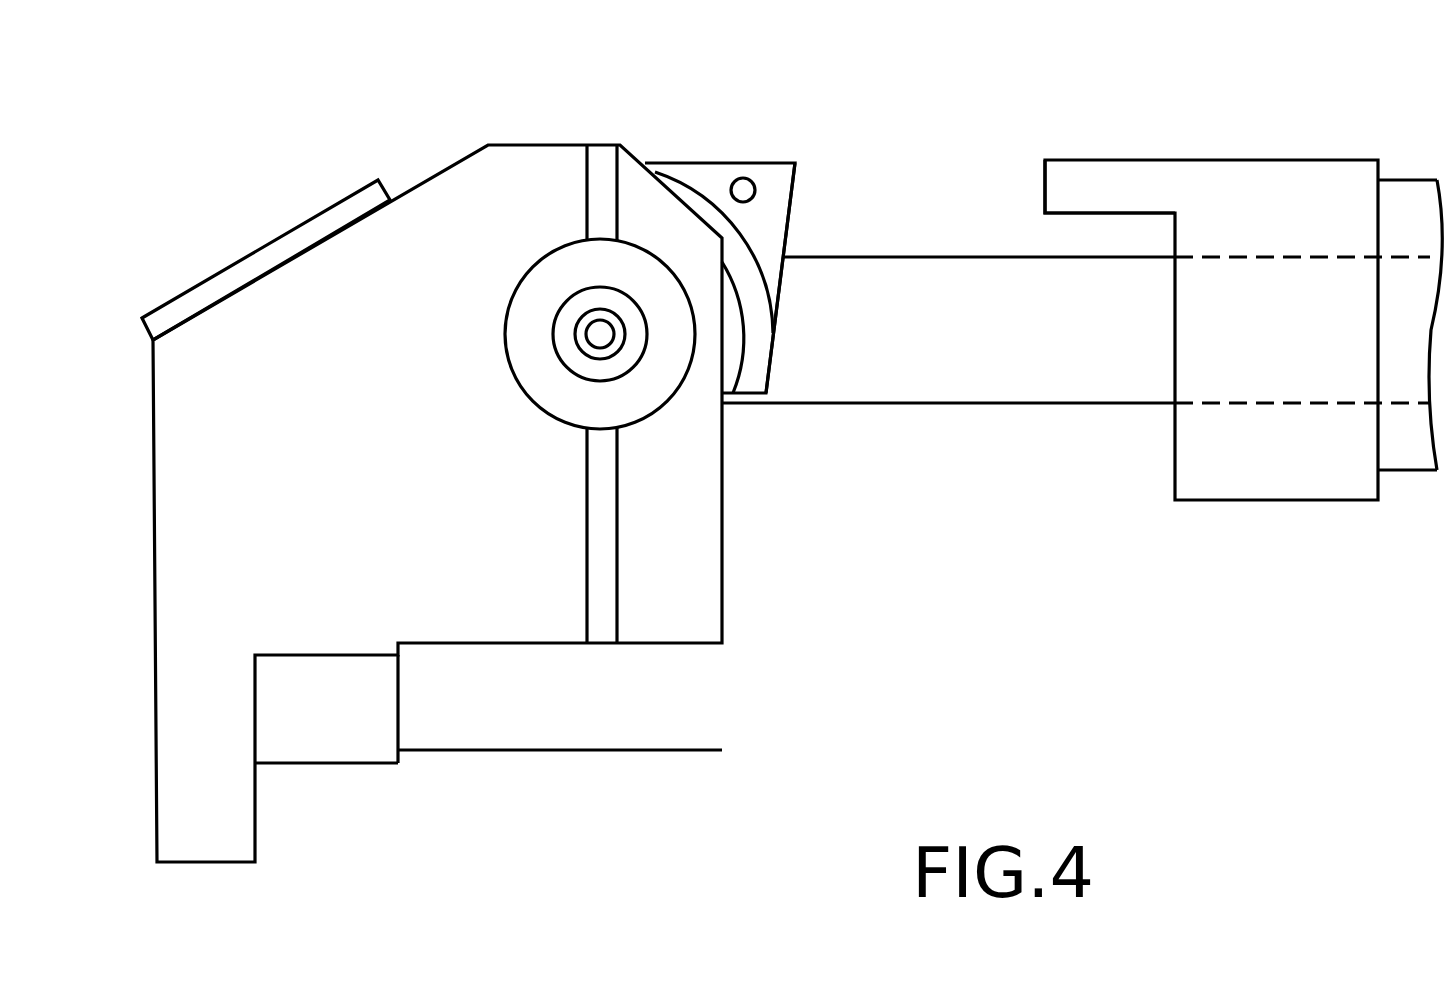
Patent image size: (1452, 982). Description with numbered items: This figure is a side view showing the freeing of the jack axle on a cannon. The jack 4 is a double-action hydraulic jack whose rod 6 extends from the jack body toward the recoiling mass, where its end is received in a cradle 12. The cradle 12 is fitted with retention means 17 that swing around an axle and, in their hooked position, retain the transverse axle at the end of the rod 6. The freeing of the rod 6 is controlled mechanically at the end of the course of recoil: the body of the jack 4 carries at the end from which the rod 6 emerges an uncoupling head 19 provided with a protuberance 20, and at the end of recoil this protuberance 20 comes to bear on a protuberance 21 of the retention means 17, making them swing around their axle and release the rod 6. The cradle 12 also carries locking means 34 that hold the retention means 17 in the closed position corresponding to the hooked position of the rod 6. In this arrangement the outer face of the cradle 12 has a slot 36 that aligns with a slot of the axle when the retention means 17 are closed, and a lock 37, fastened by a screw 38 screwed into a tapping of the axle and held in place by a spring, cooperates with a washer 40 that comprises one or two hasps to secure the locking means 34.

The jack 4 is at (1407, 478).
The rod 6 is at (918, 403).
The cradle 12 is at (393, 155).
The retention means 17 is at (762, 135).
The uncoupling head 19 is at (1238, 160).
The protuberance 20 is at (1045, 192).
The protuberance 21 is at (796, 205).
The locking means 34 is at (453, 408).
The slot 36 is at (587, 568).
The lock 37 is at (530, 405).
The screw 38 is at (617, 352).
The washer 40 is at (553, 330).